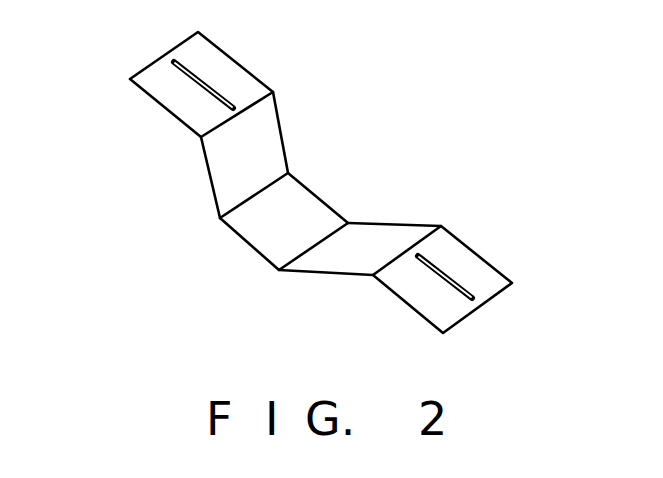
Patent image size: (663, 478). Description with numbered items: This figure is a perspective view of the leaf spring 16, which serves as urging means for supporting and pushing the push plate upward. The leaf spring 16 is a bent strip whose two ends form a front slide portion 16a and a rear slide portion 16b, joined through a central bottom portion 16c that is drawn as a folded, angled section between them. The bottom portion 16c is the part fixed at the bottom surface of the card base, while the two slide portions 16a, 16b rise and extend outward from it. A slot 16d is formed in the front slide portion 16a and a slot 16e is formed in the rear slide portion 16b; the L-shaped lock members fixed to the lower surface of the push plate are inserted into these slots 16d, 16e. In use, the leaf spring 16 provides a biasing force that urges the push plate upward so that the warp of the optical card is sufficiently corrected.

The leaf spring 16 is at (294, 179).
The front slide portion 16a is at (251, 73).
The rear slide portion 16b is at (492, 263).
The bottom portion 16c is at (240, 233).
The slot 16d is at (175, 63).
The slot 16e is at (420, 262).